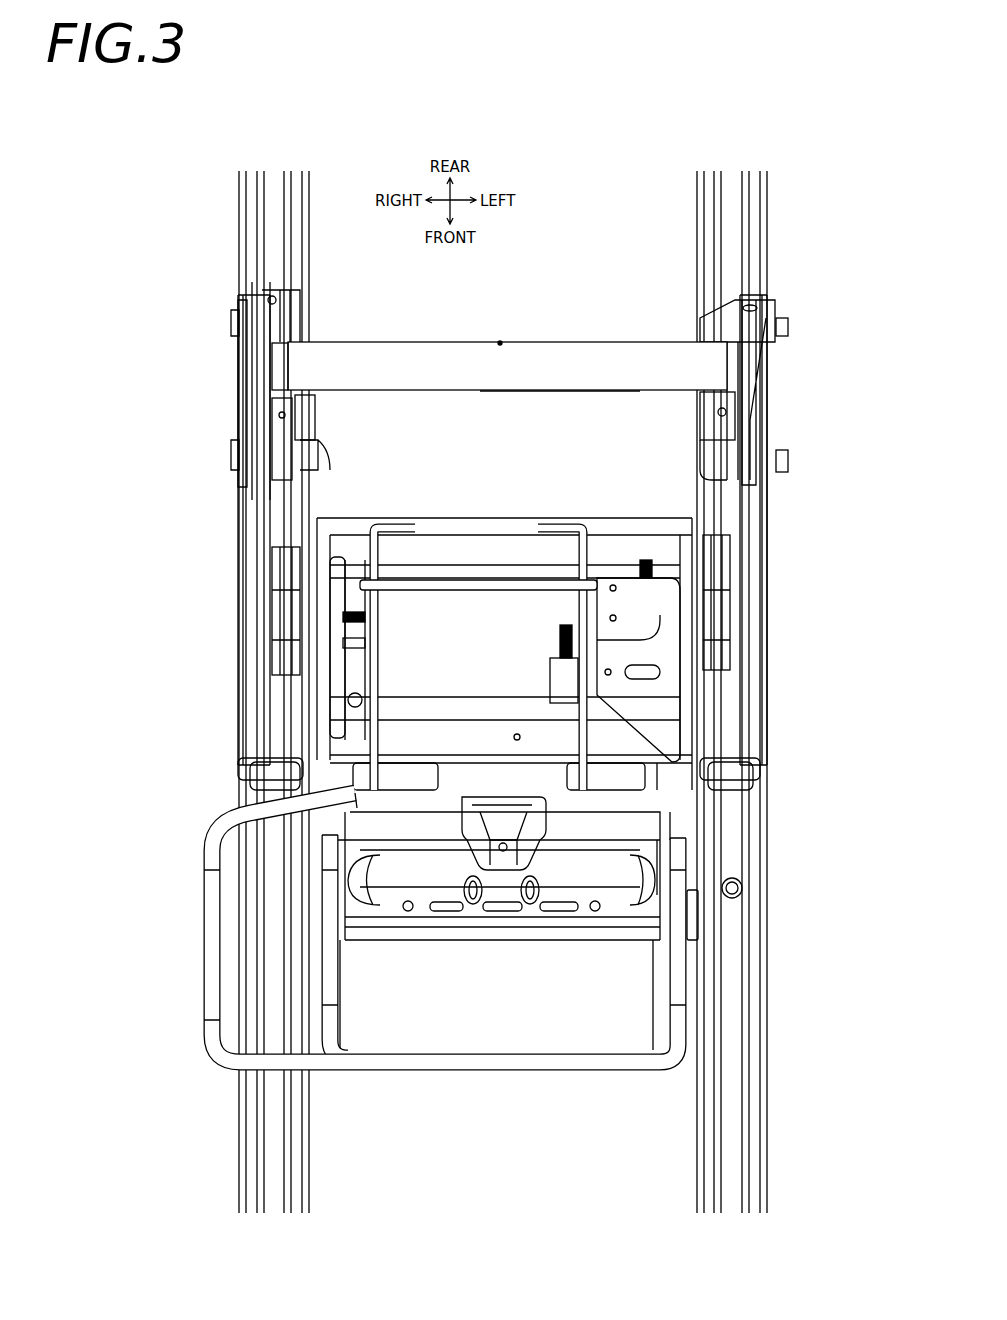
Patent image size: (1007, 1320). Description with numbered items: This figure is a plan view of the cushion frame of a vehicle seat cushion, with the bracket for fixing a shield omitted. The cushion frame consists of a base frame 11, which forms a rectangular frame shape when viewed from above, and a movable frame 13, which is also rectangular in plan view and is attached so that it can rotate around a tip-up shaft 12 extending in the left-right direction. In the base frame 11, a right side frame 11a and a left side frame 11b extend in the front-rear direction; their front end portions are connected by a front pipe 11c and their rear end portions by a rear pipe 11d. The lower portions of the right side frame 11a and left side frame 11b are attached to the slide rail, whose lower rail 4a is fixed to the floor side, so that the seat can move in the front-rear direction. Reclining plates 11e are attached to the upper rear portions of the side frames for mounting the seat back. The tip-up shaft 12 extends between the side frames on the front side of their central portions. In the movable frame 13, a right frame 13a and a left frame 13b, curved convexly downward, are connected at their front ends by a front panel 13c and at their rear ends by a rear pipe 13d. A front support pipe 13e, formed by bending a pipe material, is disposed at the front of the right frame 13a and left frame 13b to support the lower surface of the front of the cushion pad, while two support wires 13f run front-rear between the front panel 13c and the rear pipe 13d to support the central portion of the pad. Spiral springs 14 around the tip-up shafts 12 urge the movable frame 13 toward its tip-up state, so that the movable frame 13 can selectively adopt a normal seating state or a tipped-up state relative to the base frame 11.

The lower rail 4a is at (310, 268).
The base frame 11 is at (535, 335).
The right side frame 11a is at (238, 632).
The left side frame 11b is at (767, 630).
The front pipe 11c is at (472, 718).
The rear pipe 11d is at (555, 393).
The reclining plate 11e is at (237, 378).
The tip-up shaft 12 is at (368, 608).
The movable frame 13 is at (507, 511).
The right frame 13a is at (290, 785).
The left frame 13b is at (735, 793).
The front panel 13c is at (502, 942).
The rear pipe 13d is at (456, 517).
The front support pipe 13e is at (503, 1072).
The support wire 13f is at (380, 655).
The spiral spring 14 is at (290, 590).